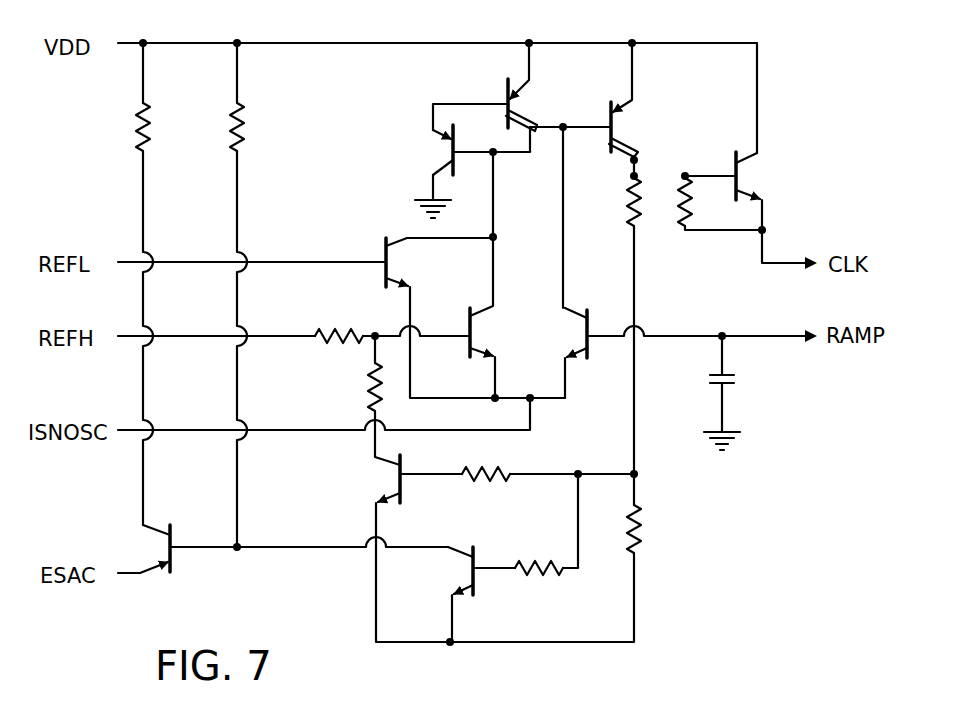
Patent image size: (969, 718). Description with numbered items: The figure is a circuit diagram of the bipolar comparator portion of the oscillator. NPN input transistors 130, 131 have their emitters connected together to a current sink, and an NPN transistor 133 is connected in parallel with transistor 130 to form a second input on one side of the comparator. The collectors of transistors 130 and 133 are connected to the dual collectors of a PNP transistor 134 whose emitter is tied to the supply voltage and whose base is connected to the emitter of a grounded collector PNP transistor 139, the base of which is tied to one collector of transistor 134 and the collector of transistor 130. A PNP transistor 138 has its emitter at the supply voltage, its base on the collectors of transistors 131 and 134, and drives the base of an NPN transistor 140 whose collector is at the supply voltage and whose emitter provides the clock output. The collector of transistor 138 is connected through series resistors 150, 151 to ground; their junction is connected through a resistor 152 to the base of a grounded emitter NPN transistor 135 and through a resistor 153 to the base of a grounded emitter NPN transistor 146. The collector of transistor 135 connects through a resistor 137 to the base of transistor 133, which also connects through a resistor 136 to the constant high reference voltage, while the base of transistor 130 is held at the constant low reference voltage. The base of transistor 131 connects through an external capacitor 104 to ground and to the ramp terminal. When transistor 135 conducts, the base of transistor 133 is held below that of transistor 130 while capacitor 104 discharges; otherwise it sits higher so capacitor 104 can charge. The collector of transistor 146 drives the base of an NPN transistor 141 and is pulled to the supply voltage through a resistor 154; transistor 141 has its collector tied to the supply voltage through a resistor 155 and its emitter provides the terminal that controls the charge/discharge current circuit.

The resistor 155 is at (153, 123).
The resistor 154 is at (244, 139).
The grounded collector PNP transistor 139 is at (450, 157).
The PNP transistor 134 is at (520, 105).
The PNP transistor 138 is at (625, 131).
The NPN transistor 140 is at (745, 166).
The NPN input transistor 130 is at (375, 248).
The NPN transistor 133 is at (468, 322).
The NPN input transistor 131 is at (577, 313).
The resistor 150 is at (642, 184).
The resistor 136 is at (345, 331).
The resistor 137 is at (368, 396).
The external capacitor 104 is at (735, 378).
The grounded emitter NPN transistor 135 is at (405, 462).
The resistor 152 is at (490, 470).
The grounded emitter NPN transistor 146 is at (478, 560).
The resistor 153 is at (525, 572).
The resistor 151 is at (645, 545).
The NPN transistor 141 is at (175, 572).